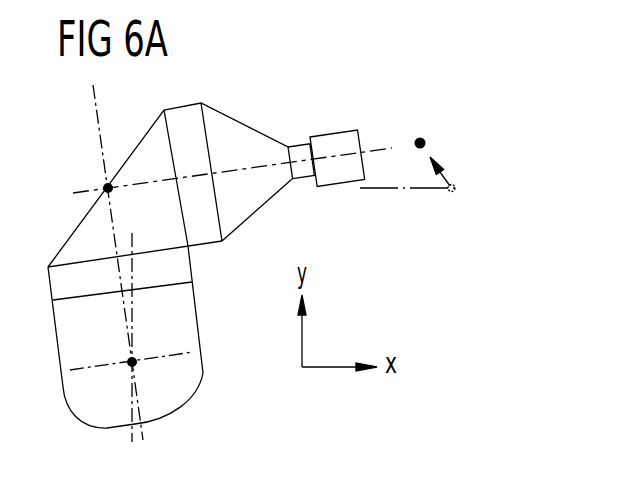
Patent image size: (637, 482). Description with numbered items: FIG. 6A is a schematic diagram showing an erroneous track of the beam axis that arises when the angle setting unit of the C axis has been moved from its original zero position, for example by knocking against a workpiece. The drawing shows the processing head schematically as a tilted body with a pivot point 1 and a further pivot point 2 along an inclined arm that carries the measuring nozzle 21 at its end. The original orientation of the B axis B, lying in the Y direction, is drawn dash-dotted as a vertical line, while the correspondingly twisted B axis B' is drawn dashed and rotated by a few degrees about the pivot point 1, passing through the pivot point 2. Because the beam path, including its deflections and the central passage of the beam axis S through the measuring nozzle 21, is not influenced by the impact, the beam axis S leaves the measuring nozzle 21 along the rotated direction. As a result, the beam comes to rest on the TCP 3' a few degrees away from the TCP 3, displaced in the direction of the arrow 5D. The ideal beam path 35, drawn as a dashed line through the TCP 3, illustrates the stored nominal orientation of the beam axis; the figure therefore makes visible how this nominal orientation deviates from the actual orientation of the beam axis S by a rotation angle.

The base body / first pivot axis point 1 is at (135, 368).
The arm link / second pivot point 2 is at (102, 186).
The measuring nozzle 21 is at (334, 133).
The TCP 3 is at (477, 204).
The TCP 3' is at (428, 110).
The arrow 5D is at (447, 175).
The ideal beam path 35 is at (395, 192).
The beam axis S is at (375, 150).
The B axis B is at (154, 337).
The twisted B axis B' is at (122, 262).